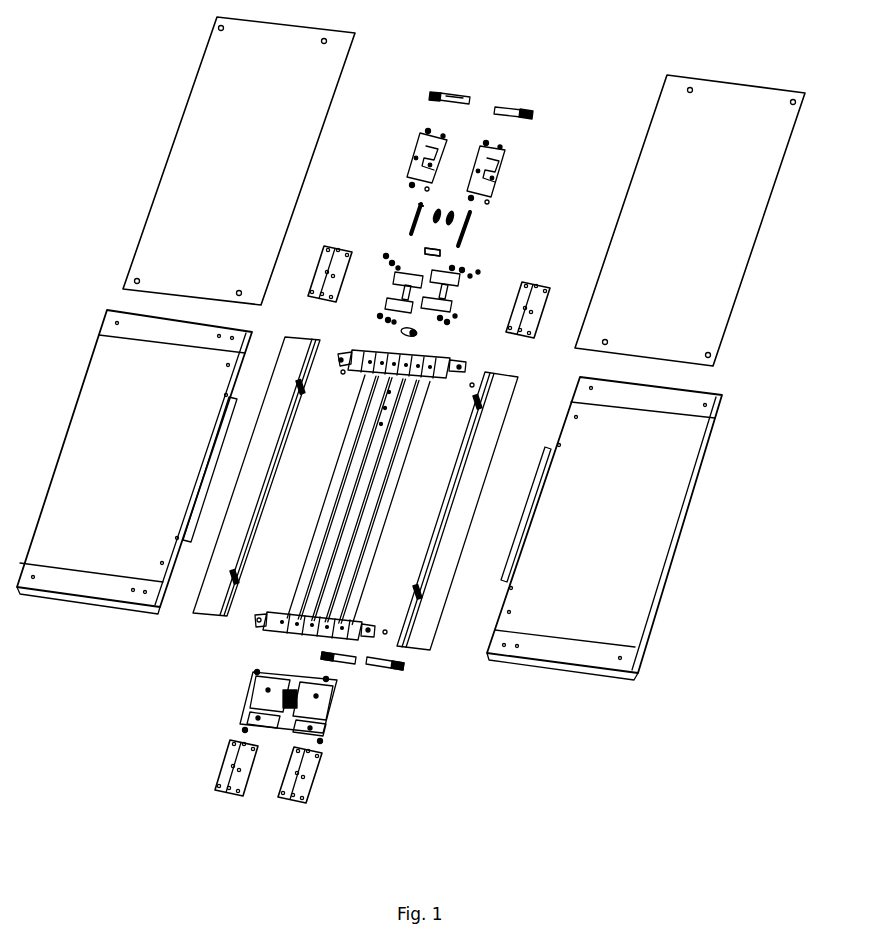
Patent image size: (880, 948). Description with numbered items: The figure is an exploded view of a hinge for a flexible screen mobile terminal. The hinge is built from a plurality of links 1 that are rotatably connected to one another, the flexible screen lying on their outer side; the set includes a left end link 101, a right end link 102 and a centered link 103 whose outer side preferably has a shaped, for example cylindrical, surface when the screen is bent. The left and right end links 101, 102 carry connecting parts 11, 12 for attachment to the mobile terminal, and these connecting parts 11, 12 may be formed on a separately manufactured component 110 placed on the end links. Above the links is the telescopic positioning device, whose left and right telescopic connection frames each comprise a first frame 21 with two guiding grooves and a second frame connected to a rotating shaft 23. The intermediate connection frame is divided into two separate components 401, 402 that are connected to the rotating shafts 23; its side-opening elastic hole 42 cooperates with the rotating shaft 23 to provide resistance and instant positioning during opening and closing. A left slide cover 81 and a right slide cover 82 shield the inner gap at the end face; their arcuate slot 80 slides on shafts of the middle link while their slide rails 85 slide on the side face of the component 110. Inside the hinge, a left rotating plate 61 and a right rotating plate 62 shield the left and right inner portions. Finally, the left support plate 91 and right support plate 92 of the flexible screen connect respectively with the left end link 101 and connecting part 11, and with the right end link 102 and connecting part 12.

The links 1 is at (367, 500).
The left end link 101 is at (378, 501).
The right end link 102 is at (386, 502).
The centered link 103 is at (433, 411).
The connecting part 11 is at (314, 650).
The connecting part 12 is at (392, 656).
The component 110 is at (314, 669).
The first frame 21 is at (445, 158).
The rotating shaft 23 is at (454, 215).
The hole 42 is at (429, 276).
The component of intermediate connection frame 401 is at (446, 332).
The component of intermediate connection frame 402 is at (470, 246).
The left rotating plate 61 is at (226, 484).
The right rotating plate 62 is at (457, 530).
The arcuate slot 80 is at (485, 86).
The left slide cover 81 is at (444, 78).
The right slide cover 82 is at (534, 99).
The slide rails 85 is at (418, 91).
The left support plate 91 is at (133, 462).
The right support plate 92 is at (617, 528).